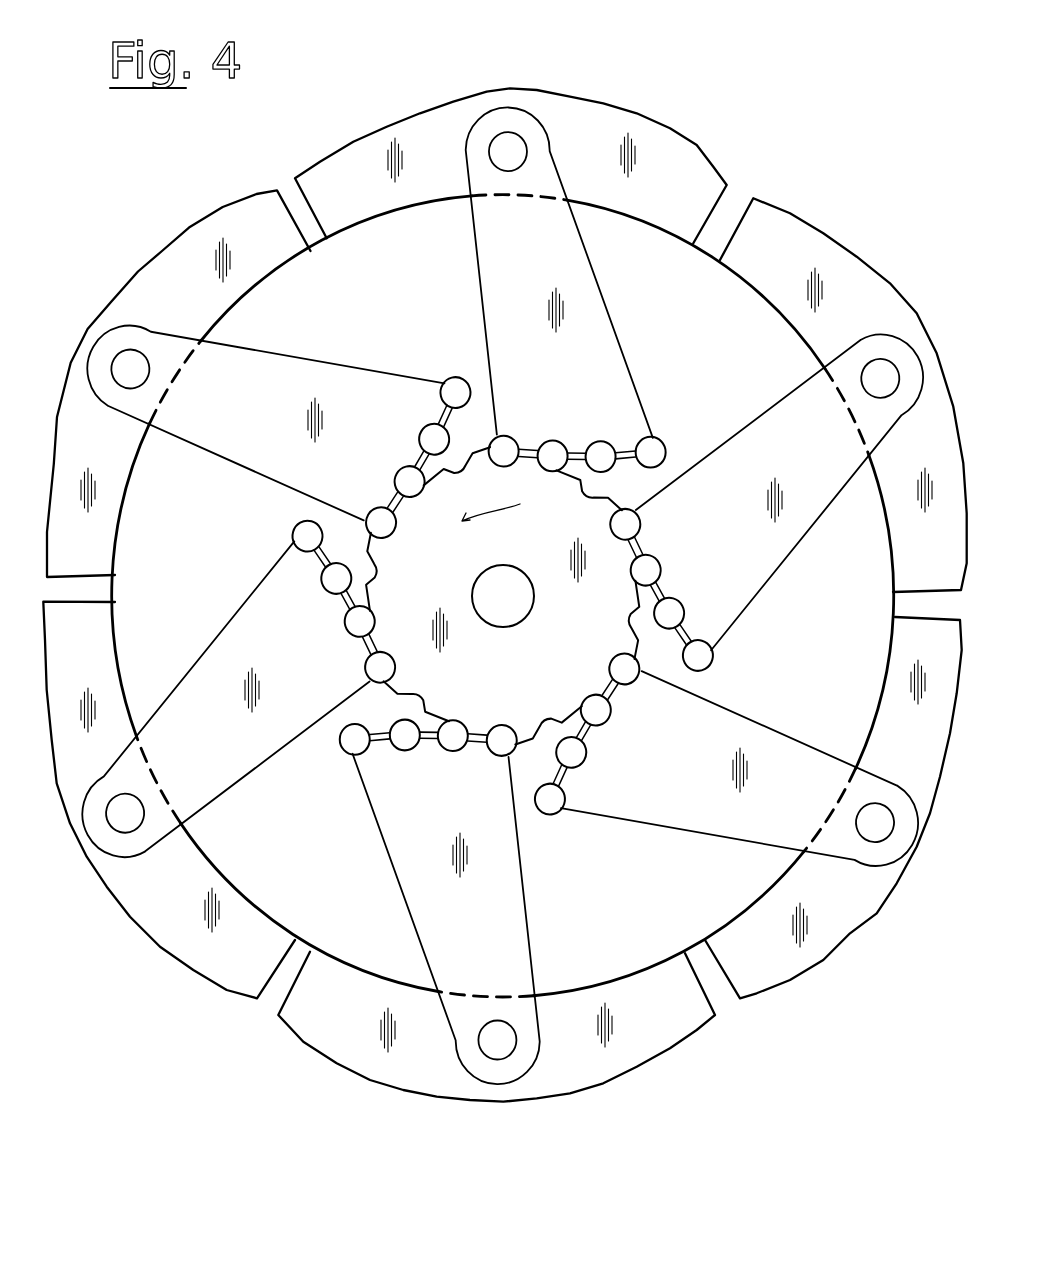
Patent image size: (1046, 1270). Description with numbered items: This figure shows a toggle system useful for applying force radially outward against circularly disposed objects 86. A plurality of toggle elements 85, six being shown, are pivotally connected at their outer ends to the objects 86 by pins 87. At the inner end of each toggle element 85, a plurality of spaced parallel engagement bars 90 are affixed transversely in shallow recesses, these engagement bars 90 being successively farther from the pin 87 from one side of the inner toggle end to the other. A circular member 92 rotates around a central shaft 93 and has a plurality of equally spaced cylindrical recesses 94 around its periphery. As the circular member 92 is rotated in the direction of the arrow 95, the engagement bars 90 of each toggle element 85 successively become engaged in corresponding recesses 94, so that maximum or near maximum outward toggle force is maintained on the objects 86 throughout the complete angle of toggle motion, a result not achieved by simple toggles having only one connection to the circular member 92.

The toggle element 85 is at (642, 420).
The circularly disposed object 86 is at (719, 262).
The pin 87 is at (514, 134).
The engagement bar 90 is at (553, 473).
The circular member 92 is at (545, 548).
The central shaft 93 is at (500, 566).
The cylindrical recess 94 is at (600, 666).
The arrow 95 is at (491, 501).